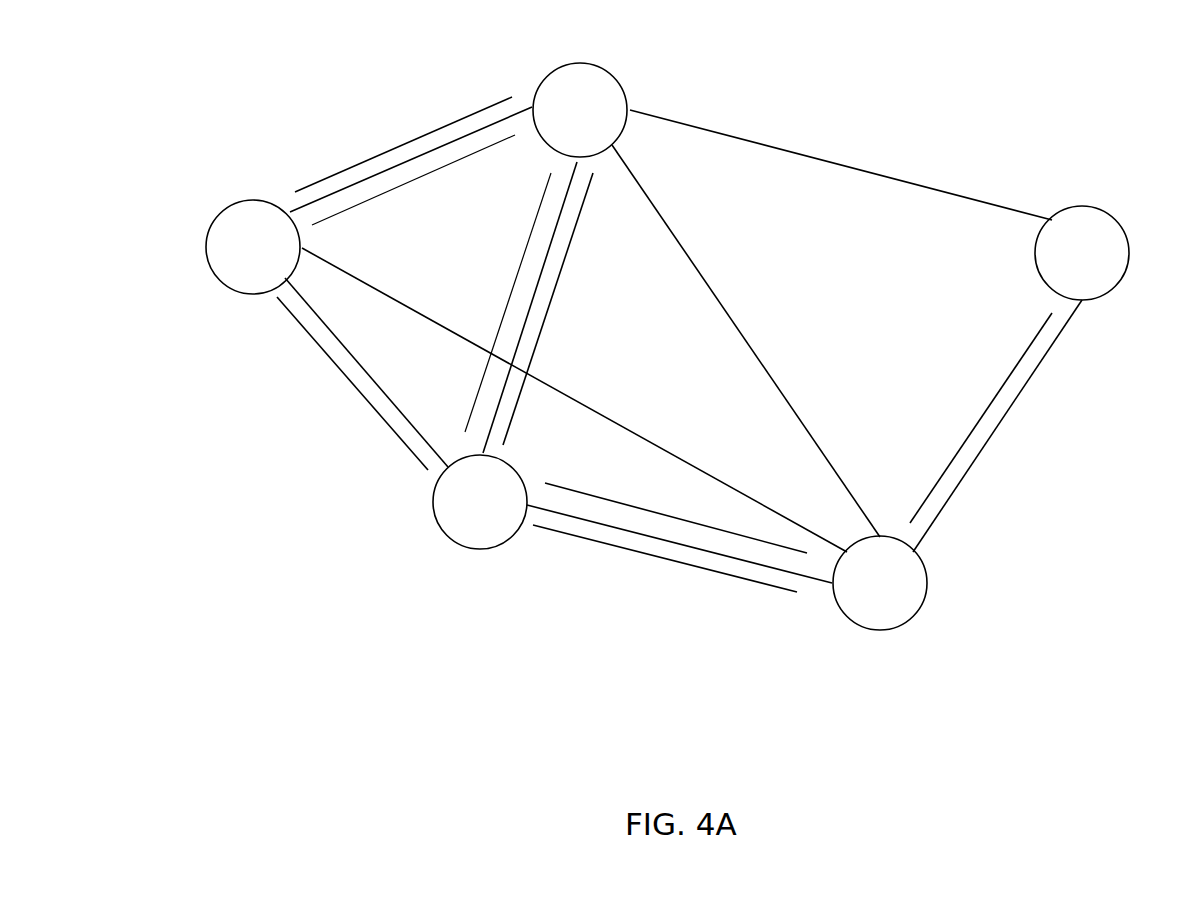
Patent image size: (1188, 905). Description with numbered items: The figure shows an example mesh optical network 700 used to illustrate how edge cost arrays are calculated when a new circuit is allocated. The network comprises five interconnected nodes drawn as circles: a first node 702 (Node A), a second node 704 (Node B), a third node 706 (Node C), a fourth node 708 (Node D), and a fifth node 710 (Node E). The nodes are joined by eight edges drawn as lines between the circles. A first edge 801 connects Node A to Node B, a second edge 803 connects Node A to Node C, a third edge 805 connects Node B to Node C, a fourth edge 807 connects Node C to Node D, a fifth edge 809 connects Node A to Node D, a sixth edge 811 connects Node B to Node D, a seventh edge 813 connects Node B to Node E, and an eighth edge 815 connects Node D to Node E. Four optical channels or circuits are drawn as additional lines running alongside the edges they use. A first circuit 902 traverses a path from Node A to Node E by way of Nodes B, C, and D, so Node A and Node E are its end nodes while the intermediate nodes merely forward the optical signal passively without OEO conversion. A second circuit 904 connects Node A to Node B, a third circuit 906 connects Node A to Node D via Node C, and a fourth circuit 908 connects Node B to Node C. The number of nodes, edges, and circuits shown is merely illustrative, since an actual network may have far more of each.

The mesh optical network 700 is at (770, 72).
The first node 702 is at (221, 212).
The second node 704 is at (590, 63).
The third node 706 is at (477, 548).
The fourth node 708 is at (917, 613).
The fifth node 710 is at (1130, 257).
The first edge 801 is at (368, 178).
The second edge 803 is at (330, 325).
The third edge 805 is at (547, 282).
The fourth edge 807 is at (660, 540).
The fifth edge 809 is at (625, 418).
The sixth edge 811 is at (752, 346).
The seventh edge 813 is at (778, 147).
The eighth edge 815 is at (993, 421).
The first circuit 902 is at (437, 129).
The second circuit 904 is at (455, 162).
The third circuit 906 is at (387, 423).
The fourth circuit 908 is at (503, 318).